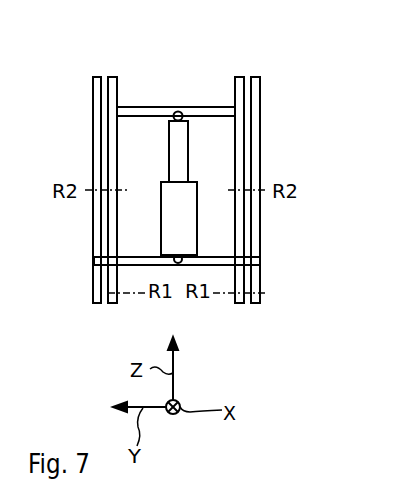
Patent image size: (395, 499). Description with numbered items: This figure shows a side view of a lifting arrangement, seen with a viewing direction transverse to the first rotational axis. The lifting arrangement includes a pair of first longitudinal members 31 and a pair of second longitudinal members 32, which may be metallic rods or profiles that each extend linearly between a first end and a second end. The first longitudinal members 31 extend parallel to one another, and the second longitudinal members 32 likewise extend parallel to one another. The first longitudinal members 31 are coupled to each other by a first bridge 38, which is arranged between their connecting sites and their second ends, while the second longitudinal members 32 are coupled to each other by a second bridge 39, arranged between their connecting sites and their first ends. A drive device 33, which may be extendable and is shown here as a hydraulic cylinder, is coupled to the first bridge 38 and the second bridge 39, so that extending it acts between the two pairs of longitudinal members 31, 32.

The first longitudinal member 31 is at (113, 84).
The second longitudinal member 32 is at (93, 225).
The drive device 33 is at (169, 150).
The first bridge 38 is at (153, 110).
The second bridge 39 is at (94, 262).